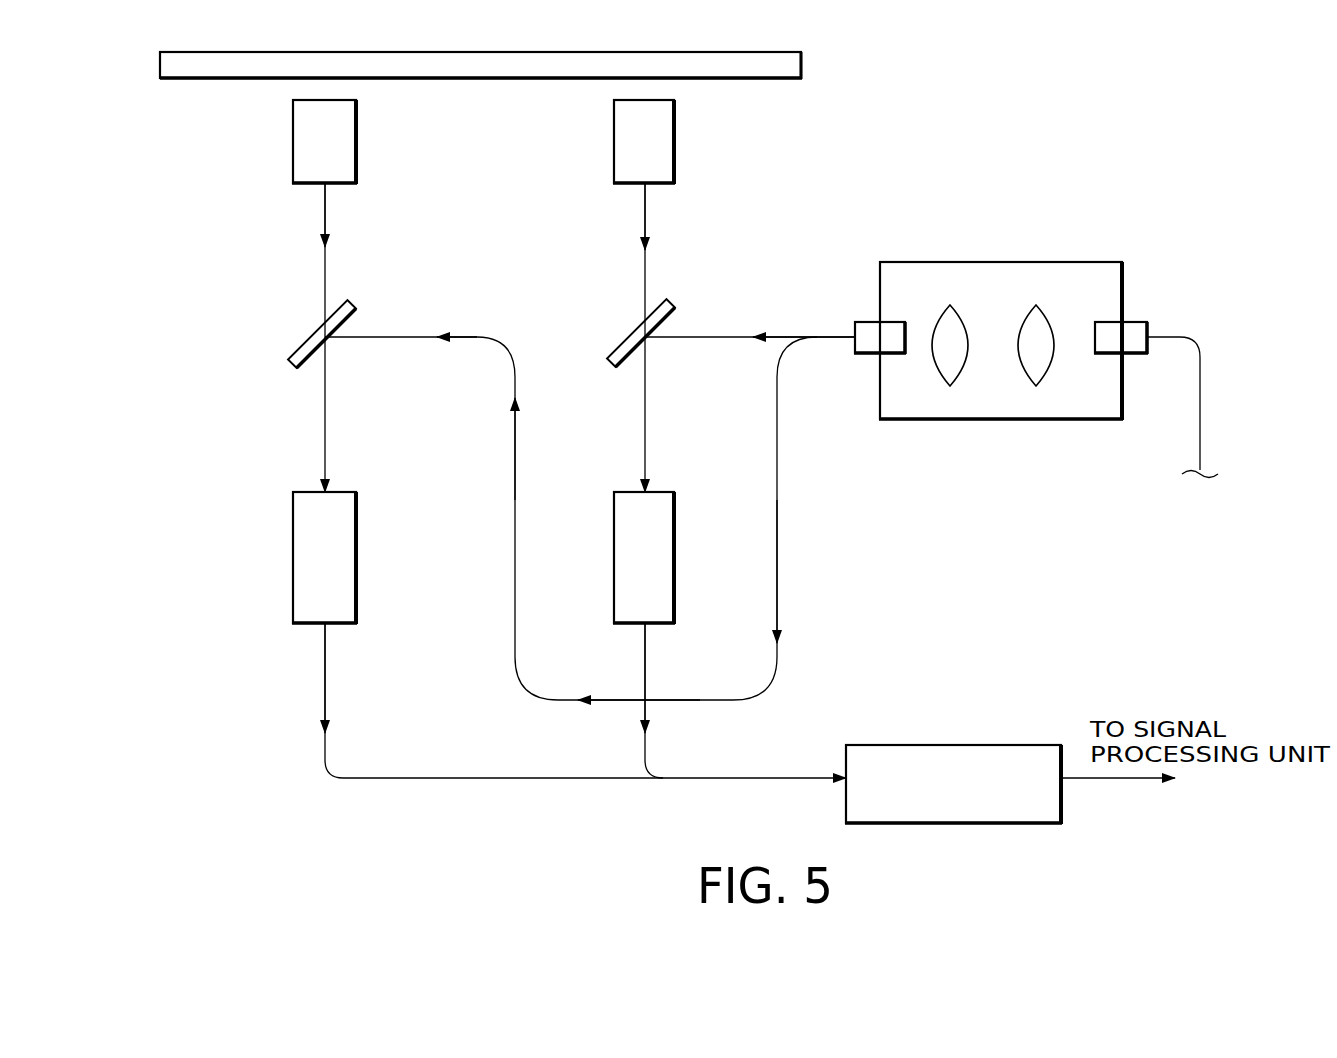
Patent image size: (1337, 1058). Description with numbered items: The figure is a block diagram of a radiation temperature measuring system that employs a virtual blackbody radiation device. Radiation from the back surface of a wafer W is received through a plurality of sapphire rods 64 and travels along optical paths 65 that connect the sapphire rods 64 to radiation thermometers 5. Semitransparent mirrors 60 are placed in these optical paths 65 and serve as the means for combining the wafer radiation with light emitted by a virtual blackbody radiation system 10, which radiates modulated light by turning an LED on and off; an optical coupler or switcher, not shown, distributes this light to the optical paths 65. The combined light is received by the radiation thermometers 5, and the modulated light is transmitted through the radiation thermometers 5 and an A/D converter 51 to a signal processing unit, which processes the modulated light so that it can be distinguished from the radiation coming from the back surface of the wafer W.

The wafer W is at (802, 66).
The sapphire rod 64 is at (357, 162).
The optical path 65 is at (325, 226).
The semitransparent mirror 60 is at (295, 343).
The radiation thermometer 5 is at (293, 535).
The virtual blackbody radiation system 10 is at (968, 262).
The A/D converter 51 is at (968, 745).